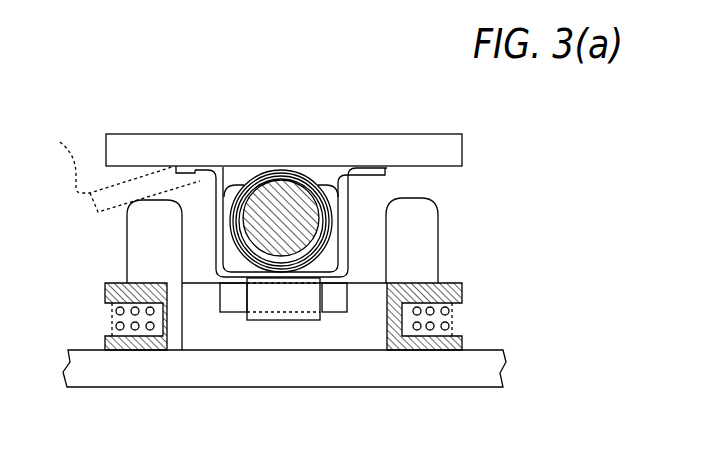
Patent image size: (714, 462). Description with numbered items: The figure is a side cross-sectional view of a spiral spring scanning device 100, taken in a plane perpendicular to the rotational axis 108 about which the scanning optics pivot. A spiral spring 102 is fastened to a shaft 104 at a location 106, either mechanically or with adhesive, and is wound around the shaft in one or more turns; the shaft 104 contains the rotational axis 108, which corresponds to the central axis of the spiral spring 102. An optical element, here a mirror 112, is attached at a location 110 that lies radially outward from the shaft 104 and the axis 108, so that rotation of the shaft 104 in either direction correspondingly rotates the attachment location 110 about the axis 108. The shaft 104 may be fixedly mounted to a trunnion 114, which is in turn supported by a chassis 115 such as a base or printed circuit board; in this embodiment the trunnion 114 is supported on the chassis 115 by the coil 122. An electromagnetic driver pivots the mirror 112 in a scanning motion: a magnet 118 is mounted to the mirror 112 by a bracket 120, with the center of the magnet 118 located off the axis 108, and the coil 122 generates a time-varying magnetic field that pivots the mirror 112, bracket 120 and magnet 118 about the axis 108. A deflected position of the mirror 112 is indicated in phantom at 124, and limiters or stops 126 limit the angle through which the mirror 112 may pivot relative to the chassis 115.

The spiral spring scanning device 100 is at (337, 388).
The spiral spring 102 is at (350, 184).
The shaft 104 is at (278, 253).
The location of spring attachment to shaft 106 is at (290, 198).
The rotational axis 108 is at (317, 205).
The optical element attachment location 110 is at (283, 162).
The mirror 112 is at (440, 133).
The trunnion 114 is at (338, 262).
The chassis 115 is at (470, 388).
The magnet 118 is at (220, 300).
The bracket 120 is at (196, 175).
The coil 122 is at (455, 310).
The mirror deflection 124 is at (109, 169).
The limiters or stops 126 is at (142, 253).